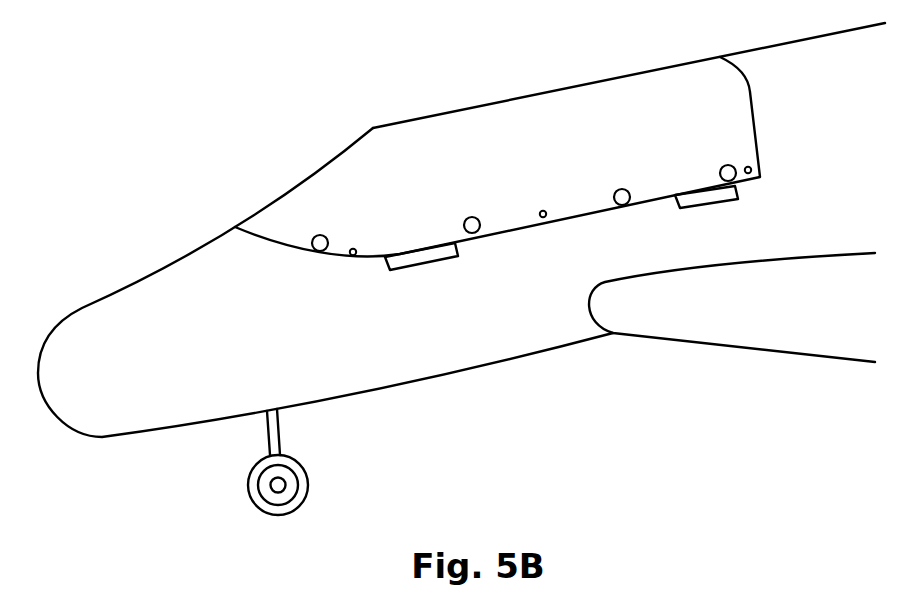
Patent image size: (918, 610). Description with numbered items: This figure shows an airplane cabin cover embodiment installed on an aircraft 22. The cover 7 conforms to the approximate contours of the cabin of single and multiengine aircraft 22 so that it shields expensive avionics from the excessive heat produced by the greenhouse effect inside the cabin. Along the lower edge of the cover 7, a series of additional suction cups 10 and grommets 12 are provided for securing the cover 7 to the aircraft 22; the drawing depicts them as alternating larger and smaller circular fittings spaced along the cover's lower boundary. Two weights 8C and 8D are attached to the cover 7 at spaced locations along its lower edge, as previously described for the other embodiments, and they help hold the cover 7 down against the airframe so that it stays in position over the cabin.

The cover 7 is at (452, 120).
The aircraft 22 is at (216, 242).
The suction cups 10 is at (312, 244).
The grommets 12 is at (356, 250).
The weight 8C is at (430, 258).
The weight 8D is at (702, 198).